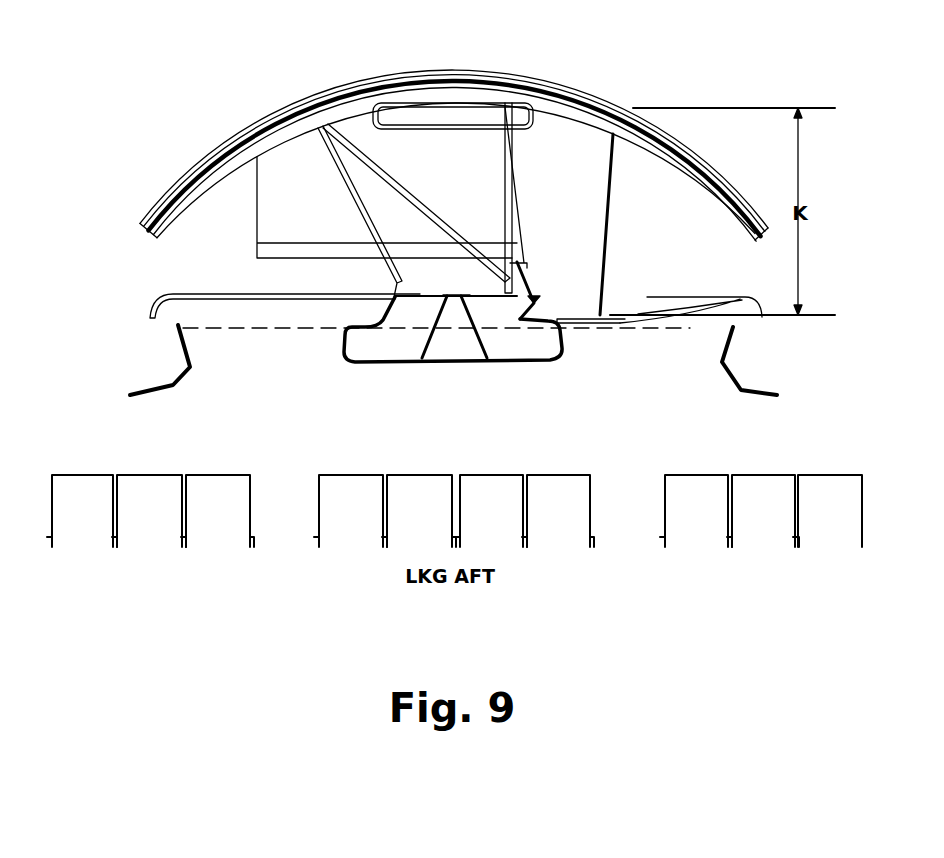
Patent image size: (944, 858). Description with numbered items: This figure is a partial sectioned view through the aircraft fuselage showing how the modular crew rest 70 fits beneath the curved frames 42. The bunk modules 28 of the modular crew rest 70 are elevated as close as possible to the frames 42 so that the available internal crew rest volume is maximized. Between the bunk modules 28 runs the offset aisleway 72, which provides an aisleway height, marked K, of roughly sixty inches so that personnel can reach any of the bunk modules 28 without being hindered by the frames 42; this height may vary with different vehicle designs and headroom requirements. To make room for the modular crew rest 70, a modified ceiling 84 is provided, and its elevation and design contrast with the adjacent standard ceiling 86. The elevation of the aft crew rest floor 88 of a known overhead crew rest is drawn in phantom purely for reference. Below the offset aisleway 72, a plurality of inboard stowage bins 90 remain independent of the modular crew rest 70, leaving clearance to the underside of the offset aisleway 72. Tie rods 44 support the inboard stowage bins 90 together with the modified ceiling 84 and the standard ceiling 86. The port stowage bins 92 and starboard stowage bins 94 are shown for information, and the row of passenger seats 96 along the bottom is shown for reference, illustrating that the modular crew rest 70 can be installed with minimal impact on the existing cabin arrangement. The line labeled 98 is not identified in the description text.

The bunk module 28 is at (294, 185).
The frame 42 is at (425, 84).
The tie rod 44 is at (368, 160).
The modular crew rest 70 is at (454, 125).
The offset aisleway 72 is at (556, 196).
The modified ceiling 84 is at (620, 327).
The standard ceiling 86 is at (306, 302).
The aft crew rest floor 88 is at (580, 332).
The inboard stowage bin 90 is at (486, 343).
The port stowage bin 92 is at (762, 393).
The starboard stowage bin 94 is at (180, 382).
The passenger seat 96 is at (414, 490).
The floor panel 98 is at (425, 277).